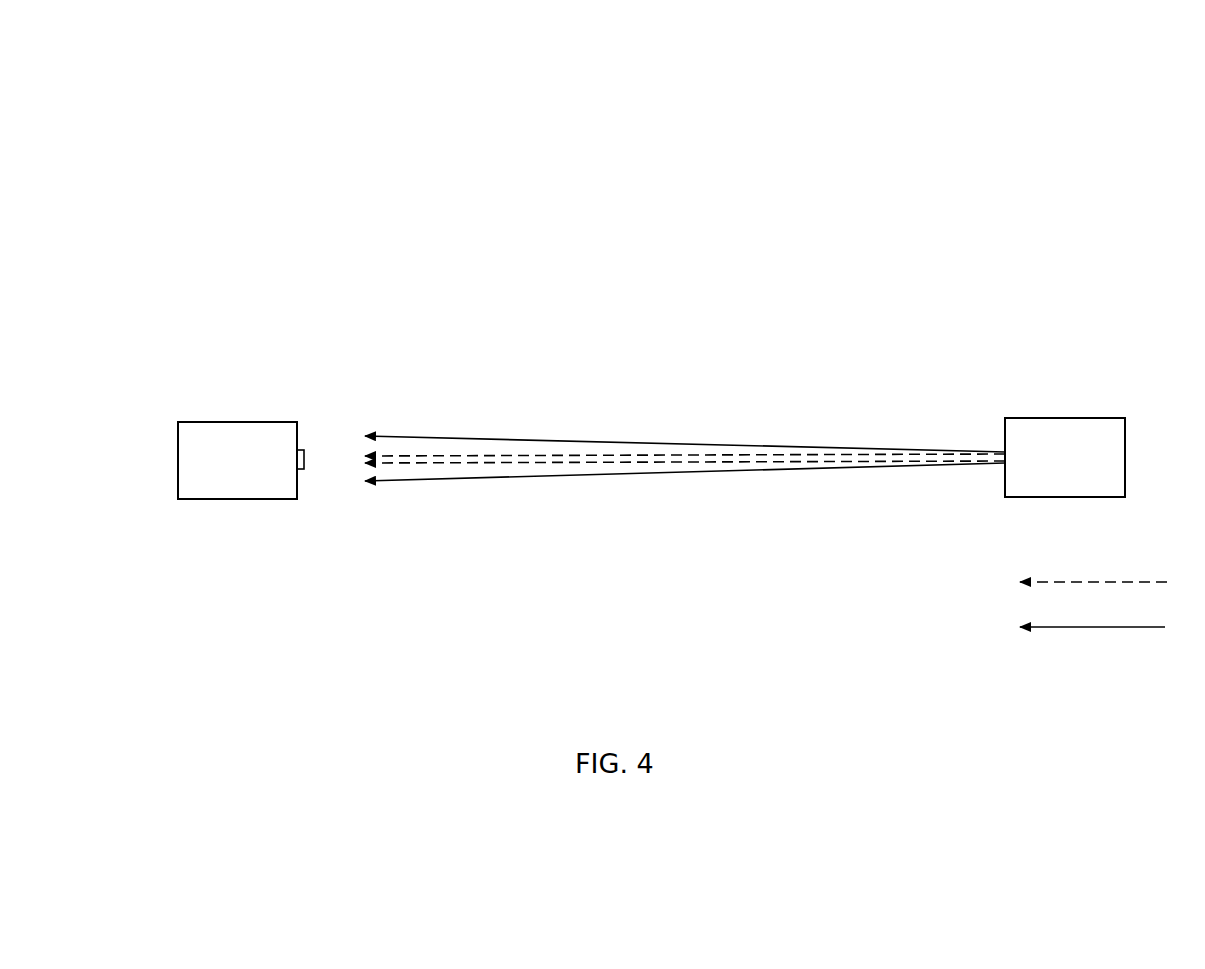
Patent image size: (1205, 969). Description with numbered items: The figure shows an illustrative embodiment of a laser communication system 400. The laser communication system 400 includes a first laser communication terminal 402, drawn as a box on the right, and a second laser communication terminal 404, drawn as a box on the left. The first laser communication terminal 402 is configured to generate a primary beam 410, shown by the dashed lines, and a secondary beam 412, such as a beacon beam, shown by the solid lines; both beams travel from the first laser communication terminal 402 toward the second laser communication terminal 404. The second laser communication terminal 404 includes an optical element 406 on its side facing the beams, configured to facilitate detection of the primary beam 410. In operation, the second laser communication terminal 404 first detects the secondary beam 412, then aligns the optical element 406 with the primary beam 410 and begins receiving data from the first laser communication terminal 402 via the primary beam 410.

The laser communication system 400 is at (276, 90).
The first laser communication terminal 402 is at (1063, 418).
The second laser communication terminal 404 is at (236, 421).
The optical element 406 is at (305, 442).
The primary beam 410 is at (1034, 588).
The secondary beam 412 is at (1036, 632).